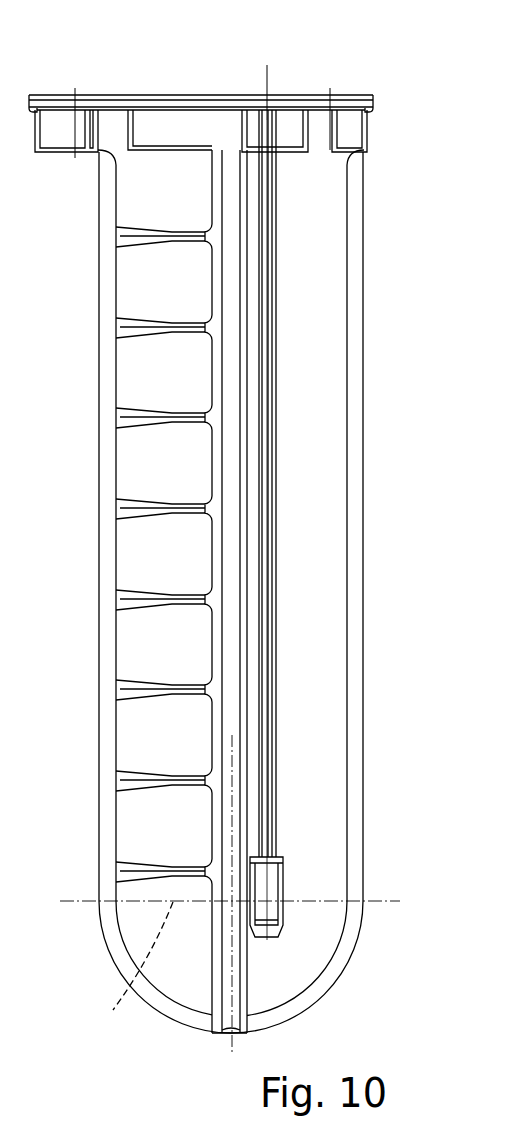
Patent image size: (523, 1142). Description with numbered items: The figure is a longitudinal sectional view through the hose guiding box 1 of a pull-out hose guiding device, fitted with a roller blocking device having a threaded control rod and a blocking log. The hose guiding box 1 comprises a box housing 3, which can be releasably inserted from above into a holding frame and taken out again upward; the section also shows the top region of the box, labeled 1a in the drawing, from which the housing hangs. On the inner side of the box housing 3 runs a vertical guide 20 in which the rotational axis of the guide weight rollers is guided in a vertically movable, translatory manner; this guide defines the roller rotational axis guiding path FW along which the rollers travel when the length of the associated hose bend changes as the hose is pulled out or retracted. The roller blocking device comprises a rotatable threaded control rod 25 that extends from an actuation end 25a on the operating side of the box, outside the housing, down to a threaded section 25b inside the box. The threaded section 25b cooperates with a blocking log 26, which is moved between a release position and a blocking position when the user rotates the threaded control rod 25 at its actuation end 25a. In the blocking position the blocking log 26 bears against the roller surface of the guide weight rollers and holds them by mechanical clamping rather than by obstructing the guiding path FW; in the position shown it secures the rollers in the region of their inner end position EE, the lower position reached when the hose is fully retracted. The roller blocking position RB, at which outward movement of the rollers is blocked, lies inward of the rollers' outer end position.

The hose guiding box 1 is at (99, 168).
The cover plate 1a is at (167, 93).
The box housing 3 is at (97, 263).
The vertical guide 20 is at (234, 553).
The roller rotational axis guiding path FW is at (228, 640).
The threaded control rod 25 is at (276, 401).
The actuation end 25a is at (270, 120).
The threaded section 25b is at (272, 857).
The blocking log 26 is at (272, 913).
The end position inwards with respect to the box EE is at (132, 902).
The roller blocking position RB is at (133, 978).